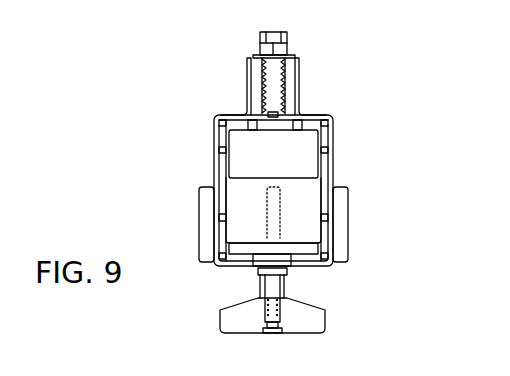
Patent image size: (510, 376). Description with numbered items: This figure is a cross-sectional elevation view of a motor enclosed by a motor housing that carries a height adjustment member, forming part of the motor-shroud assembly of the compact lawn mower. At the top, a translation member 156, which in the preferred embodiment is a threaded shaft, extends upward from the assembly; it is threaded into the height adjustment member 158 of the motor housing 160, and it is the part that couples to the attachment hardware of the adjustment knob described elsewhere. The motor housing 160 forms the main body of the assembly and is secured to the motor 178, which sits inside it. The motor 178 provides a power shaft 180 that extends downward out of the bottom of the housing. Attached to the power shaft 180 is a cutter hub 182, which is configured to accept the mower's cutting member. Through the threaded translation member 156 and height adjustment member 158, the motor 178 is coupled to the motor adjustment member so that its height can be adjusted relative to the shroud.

The translation member 156 is at (281, 29).
The height adjustment member 158 is at (301, 73).
The motor housing 160 is at (221, 120).
The motor 178 is at (292, 156).
The power shaft 180 is at (265, 269).
The cutter hub 182 is at (303, 318).